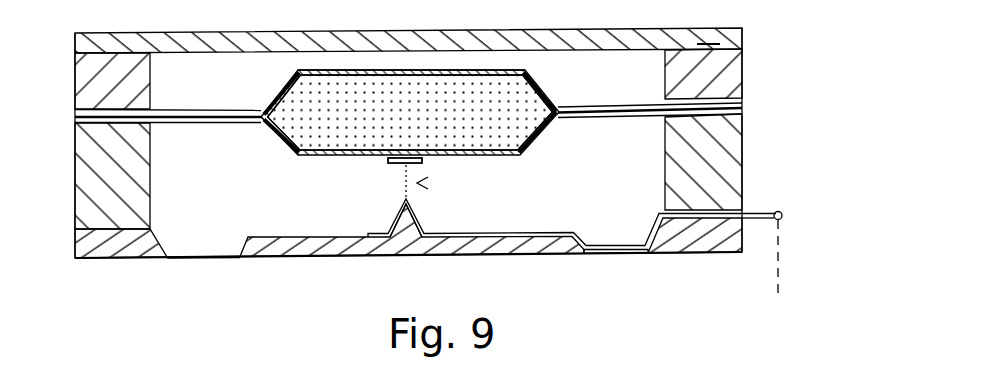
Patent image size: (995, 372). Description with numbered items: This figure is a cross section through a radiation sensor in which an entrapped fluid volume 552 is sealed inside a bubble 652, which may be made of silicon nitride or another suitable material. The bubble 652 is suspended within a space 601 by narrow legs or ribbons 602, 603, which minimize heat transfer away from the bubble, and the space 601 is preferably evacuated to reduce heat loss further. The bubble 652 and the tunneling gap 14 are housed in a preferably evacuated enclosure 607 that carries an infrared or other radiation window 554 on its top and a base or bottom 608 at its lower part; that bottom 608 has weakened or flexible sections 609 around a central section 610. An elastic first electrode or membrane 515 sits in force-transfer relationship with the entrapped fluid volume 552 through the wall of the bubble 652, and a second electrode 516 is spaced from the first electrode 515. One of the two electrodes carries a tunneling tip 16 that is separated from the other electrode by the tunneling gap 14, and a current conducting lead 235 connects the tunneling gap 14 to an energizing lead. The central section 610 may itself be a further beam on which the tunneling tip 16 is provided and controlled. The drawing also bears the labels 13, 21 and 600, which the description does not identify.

The radiation window 554 is at (742, 29).
The bubble 652 is at (270, 100).
The leg or ribbon 602 is at (573, 106).
The enclosure 607 is at (727, 72).
The leg or ribbon 603 is at (236, 122).
The fluid volume 552 is at (477, 126).
The space 601 is at (193, 224).
The first electrode 515 is at (389, 163).
The tunneling gap 14 is at (418, 183).
The axis 13 is at (400, 184).
The tunneling tip 16 is at (433, 224).
The current conducting lead 235 is at (585, 238).
The terminal 21 is at (779, 240).
The base plate 600 is at (119, 262).
The flexible sections 609 is at (213, 260).
The second electrode 516 is at (392, 220).
The central section 610 is at (453, 248).
The bottom 608 is at (567, 255).